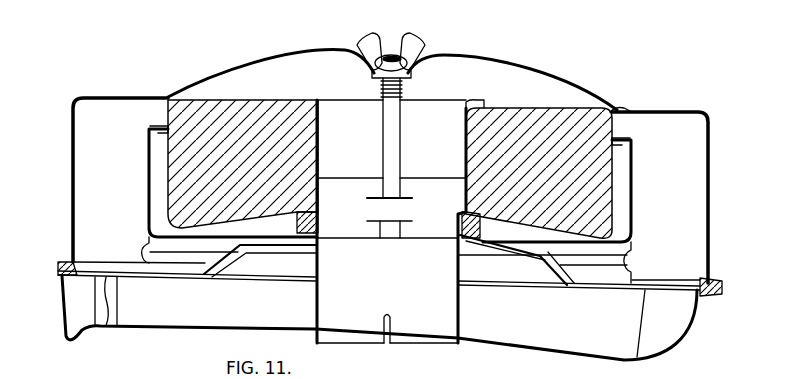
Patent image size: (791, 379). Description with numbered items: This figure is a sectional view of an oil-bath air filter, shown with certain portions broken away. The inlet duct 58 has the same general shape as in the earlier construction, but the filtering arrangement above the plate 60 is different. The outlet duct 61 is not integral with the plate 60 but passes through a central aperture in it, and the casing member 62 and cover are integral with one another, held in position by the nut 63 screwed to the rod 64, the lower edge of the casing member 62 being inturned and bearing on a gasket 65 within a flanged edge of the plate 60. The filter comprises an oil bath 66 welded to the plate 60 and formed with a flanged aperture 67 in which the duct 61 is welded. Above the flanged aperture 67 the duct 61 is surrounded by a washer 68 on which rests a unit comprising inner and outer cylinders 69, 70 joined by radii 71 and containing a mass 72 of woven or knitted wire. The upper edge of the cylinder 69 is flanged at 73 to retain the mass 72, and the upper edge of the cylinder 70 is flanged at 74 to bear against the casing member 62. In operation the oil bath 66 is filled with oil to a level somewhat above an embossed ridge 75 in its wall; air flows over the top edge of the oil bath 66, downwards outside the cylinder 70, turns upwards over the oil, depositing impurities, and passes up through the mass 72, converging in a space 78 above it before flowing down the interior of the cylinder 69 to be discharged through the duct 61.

The inlet duct 58 is at (497, 333).
The plate 60 is at (238, 277).
The outlet duct 61 is at (457, 300).
The casing member 62 is at (76, 194).
The nut 63 is at (427, 49).
The rod 64 is at (388, 138).
The gasket 65 is at (77, 268).
The oil bath 66 is at (147, 165).
The flanged aperture 67 is at (310, 241).
The washer 68 is at (316, 223).
The inner cylinder 69 is at (318, 160).
The outer cylinder 70 is at (168, 140).
The radii 71 is at (510, 238).
The mass of woven or knitted wire 72 is at (521, 108).
The flange of inner cylinder 73 is at (478, 104).
The flange of outer cylinder 74 is at (618, 113).
The embossed ridge 75 is at (630, 258).
The space 78 is at (302, 60).